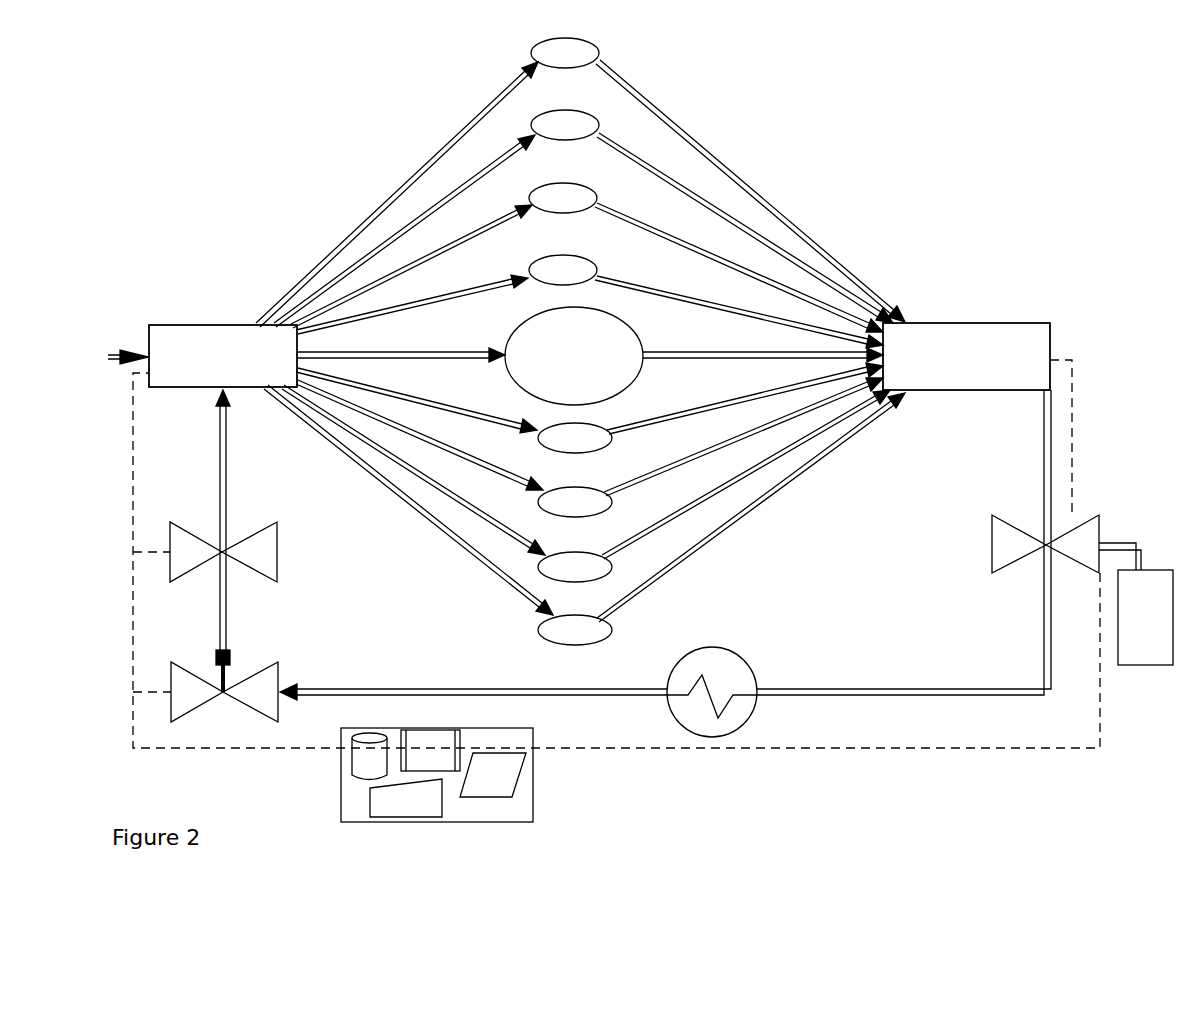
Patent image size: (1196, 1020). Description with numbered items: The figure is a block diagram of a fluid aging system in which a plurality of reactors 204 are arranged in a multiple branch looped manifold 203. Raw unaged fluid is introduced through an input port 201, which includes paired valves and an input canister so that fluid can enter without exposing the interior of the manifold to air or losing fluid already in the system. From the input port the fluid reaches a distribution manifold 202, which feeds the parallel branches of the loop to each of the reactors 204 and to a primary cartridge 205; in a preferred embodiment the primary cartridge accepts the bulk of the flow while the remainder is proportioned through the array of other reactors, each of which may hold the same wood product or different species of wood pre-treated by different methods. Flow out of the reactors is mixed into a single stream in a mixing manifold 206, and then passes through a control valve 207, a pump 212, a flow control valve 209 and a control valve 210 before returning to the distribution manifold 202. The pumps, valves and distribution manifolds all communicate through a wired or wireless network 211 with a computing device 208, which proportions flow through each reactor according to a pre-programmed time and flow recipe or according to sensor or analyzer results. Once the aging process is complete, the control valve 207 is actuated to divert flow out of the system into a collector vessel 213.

The input port 201 is at (110, 353).
The distribution manifold 202 is at (237, 324).
The multiple branch looped manifold 203 is at (447, 197).
The reactors 204 is at (598, 122).
The primary cartridge 205 is at (632, 323).
The mixing manifold 206 is at (1012, 270).
The control valve 207 is at (990, 551).
The computing device 208 is at (536, 787).
The flow control valve 209 is at (172, 680).
The control valve 210 is at (170, 551).
The wired or wireless network 211 is at (909, 760).
The pump 212 is at (755, 598).
The collector vessel 213 is at (1136, 604).